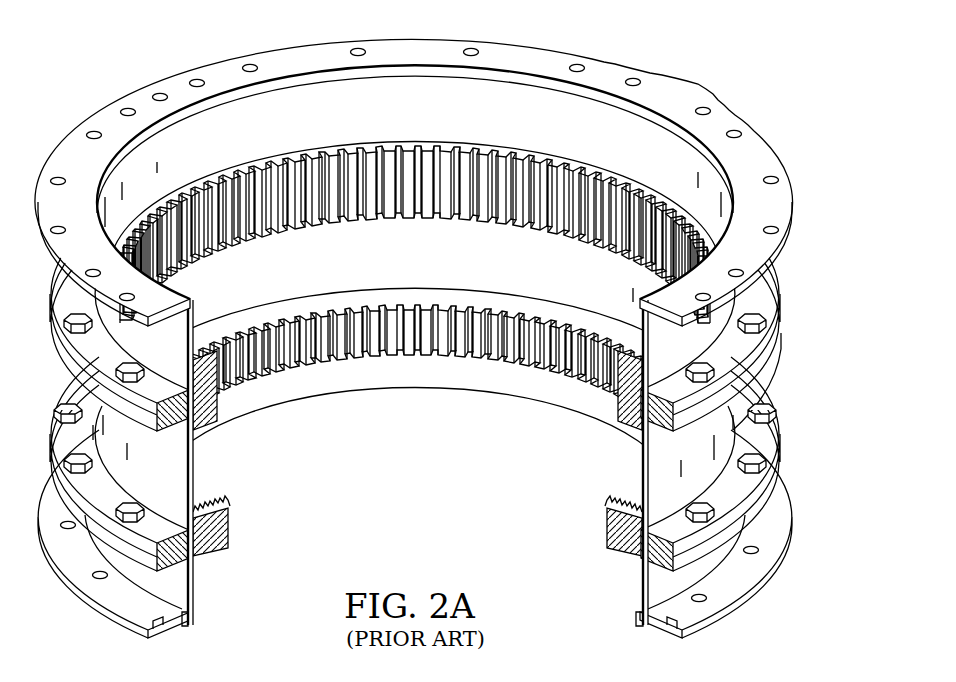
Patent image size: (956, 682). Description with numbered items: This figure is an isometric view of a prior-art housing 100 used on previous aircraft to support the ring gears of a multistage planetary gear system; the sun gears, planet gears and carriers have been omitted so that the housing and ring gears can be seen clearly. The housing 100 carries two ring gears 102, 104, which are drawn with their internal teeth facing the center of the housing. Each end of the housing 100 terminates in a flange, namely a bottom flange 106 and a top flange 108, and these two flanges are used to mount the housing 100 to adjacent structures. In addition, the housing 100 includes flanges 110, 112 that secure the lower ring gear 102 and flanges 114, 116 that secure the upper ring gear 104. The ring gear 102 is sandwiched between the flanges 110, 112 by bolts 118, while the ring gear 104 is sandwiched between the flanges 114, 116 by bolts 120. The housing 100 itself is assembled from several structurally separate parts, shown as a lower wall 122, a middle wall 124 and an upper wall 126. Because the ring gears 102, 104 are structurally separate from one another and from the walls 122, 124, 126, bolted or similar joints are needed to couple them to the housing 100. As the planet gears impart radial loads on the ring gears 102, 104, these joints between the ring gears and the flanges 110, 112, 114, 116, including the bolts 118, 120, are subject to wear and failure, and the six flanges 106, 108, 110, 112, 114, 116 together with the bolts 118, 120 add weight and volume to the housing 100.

The housing 100 is at (450, 327).
The ring gear 102 is at (268, 373).
The ring gear 104 is at (447, 223).
The bottom flange 106 is at (778, 539).
The top flange 108 is at (726, 120).
The flange 110 is at (770, 515).
The flange 112 is at (776, 432).
The flange 114 is at (781, 347).
The flange 116 is at (776, 292).
The bolts 118 is at (776, 452).
The bolts 120 is at (776, 319).
The lower wall 122 is at (178, 583).
The middle wall 124 is at (178, 462).
The upper wall 126 is at (183, 320).